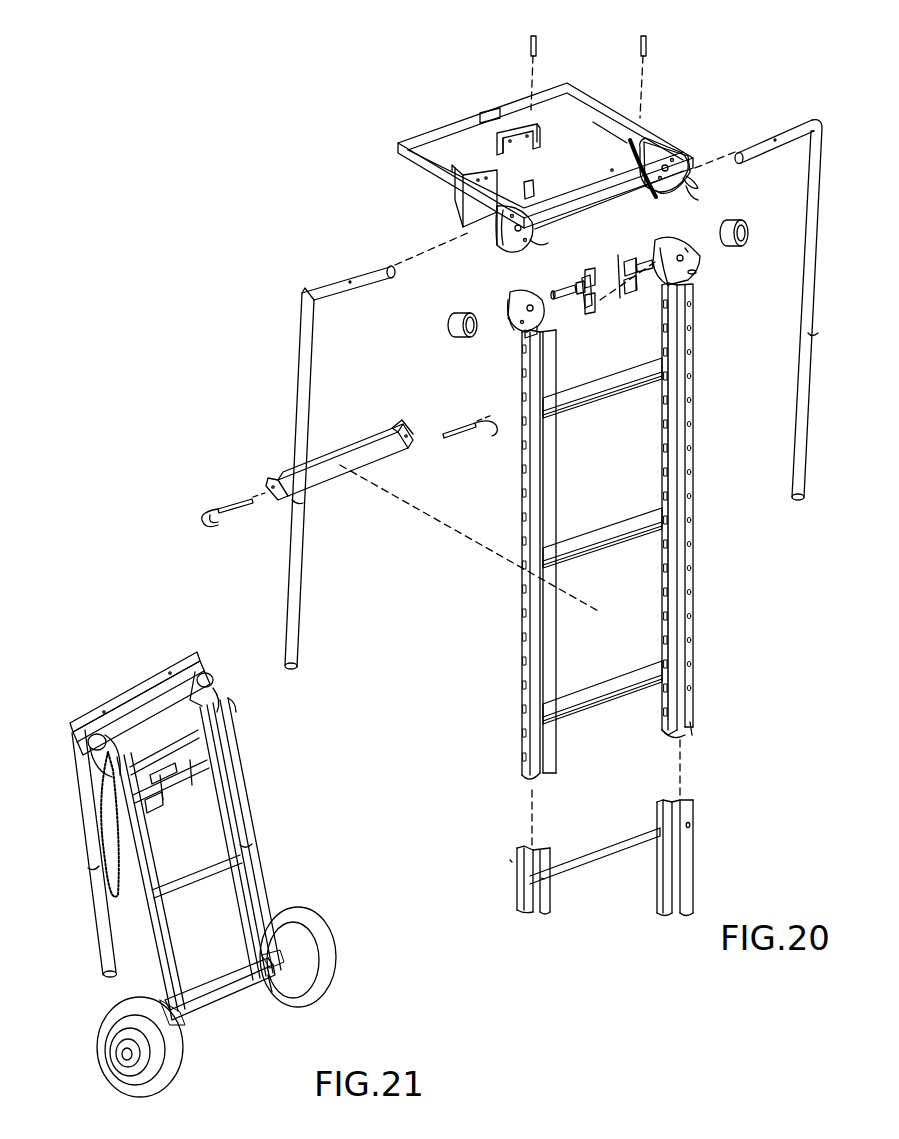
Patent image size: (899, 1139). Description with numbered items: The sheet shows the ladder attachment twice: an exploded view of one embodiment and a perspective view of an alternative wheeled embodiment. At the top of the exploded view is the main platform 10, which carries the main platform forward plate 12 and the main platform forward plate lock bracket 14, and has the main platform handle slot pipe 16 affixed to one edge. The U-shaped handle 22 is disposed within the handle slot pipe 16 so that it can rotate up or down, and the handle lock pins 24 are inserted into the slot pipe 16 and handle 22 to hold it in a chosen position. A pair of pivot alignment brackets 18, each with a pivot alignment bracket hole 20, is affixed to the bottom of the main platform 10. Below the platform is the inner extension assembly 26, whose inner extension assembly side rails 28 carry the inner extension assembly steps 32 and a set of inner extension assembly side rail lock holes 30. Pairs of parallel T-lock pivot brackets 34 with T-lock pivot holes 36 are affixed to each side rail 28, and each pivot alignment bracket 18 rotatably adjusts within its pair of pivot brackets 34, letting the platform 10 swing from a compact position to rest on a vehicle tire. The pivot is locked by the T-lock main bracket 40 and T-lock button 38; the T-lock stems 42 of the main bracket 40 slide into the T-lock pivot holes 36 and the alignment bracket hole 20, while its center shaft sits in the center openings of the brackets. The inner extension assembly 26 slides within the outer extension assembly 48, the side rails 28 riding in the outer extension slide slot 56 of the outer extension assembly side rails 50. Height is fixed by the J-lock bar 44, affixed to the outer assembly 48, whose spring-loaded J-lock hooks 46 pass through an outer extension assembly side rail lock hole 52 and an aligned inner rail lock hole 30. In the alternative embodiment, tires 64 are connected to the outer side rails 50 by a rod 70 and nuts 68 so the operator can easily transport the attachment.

In FIG. 20, the main platform 10 is at (600, 120).
In FIG. 21, the main platform 10 is at (150, 712).
In FIG. 20, the main platform forward plate 12 is at (462, 212).
In FIG. 20, the main platform forward plate lock bracket 14 is at (545, 195).
In FIG. 20, the main platform handle slot pipe 16 is at (684, 176).
In FIG. 20, the pivot alignment bracket 18 is at (505, 250).
In FIG. 20, the pivot alignment bracket hole 20 is at (532, 240).
In FIG. 20, the handle 22 is at (296, 570).
In FIG. 20, the handle lock pin 24 is at (530, 46).
In FIG. 20, the inner extension assembly 26 is at (698, 740).
In FIG. 20, the inner extension assembly side rail 28 is at (522, 672).
In FIG. 20, the inner extension assembly side rail lock hole 30 is at (692, 385).
In FIG. 20, the inner extension assembly step 32 is at (600, 395).
In FIG. 20, the T-lock pivot bracket 34 is at (512, 305).
In FIG. 20, the T-lock pivot hole 36 is at (512, 322).
In FIG. 20, the T-lock button 38 is at (455, 332).
In FIG. 20, the T-lock main bracket 40 is at (583, 289).
In FIG. 20, the T-lock stem 42 is at (628, 295).
In FIG. 20, the J-lock bar 44 is at (340, 462).
In FIG. 20, the J-lock hook 46 is at (487, 420).
In FIG. 20, the outer extension assembly 48 is at (503, 860).
In FIG. 20, the outer extension assembly side rail 50 is at (520, 895).
In FIG. 21, the outer extension assembly side rail 50 is at (252, 880).
In FIG. 20, the outer extension assembly side rail lock hole 52 is at (690, 825).
In FIG. 20, the outer extension slide slot 56 is at (552, 877).
In FIG. 21, the tire 64 is at (318, 1000).
In FIG. 21, the nut 68 is at (140, 1058).
In FIG. 21, the rod 70 is at (213, 1005).